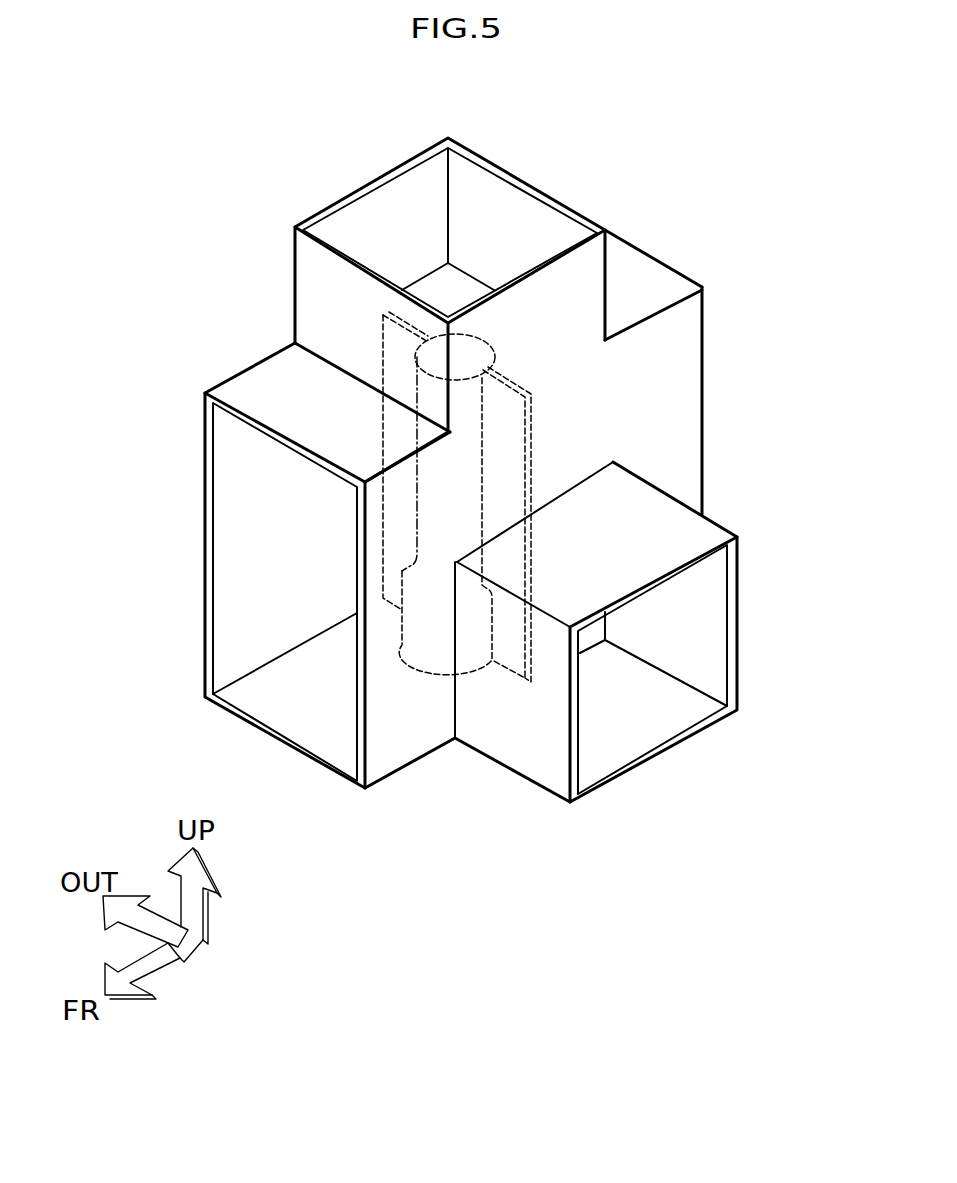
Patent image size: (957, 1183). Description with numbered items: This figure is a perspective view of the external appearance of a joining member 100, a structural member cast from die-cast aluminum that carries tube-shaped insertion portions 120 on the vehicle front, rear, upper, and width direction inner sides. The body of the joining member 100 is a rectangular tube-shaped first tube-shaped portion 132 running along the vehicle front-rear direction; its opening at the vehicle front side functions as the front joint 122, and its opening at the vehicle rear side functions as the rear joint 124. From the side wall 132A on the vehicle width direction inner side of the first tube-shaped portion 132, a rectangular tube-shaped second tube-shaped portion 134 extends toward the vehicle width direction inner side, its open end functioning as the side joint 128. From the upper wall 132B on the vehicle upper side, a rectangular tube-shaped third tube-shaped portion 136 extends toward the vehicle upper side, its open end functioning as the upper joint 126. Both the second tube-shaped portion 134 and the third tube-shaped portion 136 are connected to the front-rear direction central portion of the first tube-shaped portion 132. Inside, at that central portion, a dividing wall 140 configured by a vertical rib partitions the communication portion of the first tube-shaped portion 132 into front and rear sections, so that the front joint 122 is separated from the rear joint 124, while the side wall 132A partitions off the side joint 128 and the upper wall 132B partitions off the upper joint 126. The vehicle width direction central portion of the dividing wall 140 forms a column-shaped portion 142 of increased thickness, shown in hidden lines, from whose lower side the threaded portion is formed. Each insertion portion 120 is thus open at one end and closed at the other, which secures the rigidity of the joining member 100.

The joining member 100 is at (681, 149).
The insertion portions 120 is at (482, 457).
The front joint 122 is at (292, 707).
The rear joint 124 is at (683, 463).
The upper joint 126 is at (493, 214).
The side joint 128 is at (645, 728).
The first tube-shaped portion 132 is at (650, 283).
The side wall 132A is at (667, 427).
The upper wall 132B is at (273, 383).
The second tube-shaped portion 134 is at (660, 530).
The third tube-shaped portion 136 is at (315, 273).
The dividing wall 140 is at (510, 417).
The column-shaped portion 142 is at (463, 462).